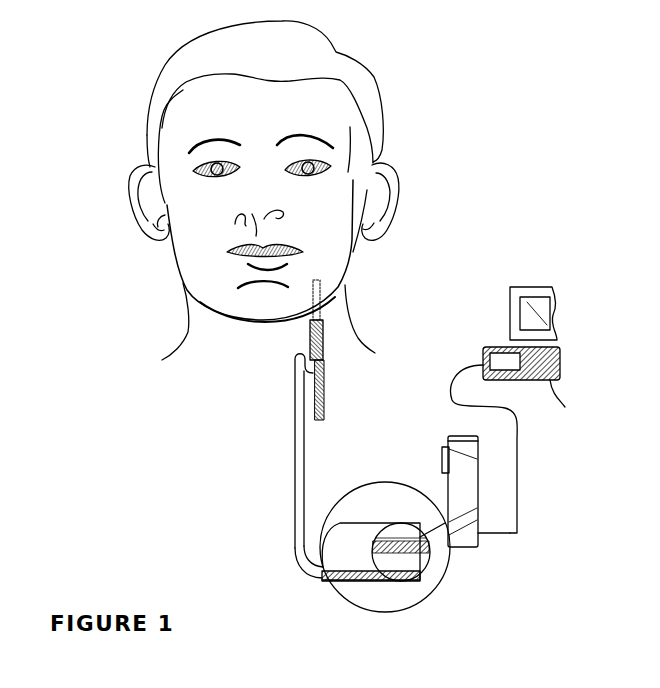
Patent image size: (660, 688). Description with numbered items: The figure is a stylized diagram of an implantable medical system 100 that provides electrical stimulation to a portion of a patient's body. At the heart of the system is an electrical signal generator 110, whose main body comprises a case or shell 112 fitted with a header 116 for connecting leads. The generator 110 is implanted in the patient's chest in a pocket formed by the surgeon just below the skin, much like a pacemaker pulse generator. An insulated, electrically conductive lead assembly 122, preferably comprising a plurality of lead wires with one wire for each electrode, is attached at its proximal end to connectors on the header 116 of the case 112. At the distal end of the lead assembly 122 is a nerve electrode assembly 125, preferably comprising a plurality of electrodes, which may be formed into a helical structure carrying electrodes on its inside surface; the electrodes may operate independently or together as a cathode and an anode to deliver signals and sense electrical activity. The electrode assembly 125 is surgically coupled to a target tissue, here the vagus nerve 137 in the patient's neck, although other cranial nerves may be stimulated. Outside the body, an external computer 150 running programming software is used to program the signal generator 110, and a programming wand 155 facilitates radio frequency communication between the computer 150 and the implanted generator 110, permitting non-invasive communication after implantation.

The implantable medical system 100 is at (573, 140).
The electrical signal generator 110 is at (352, 552).
The case or shell 112 is at (414, 537).
The header 116 is at (402, 571).
The lead assembly 122 is at (293, 454).
The nerve electrode assembly 125 is at (292, 341).
The vagus nerve 137 is at (324, 308).
The external computer 150 is at (526, 410).
The programming wand 155 is at (447, 439).